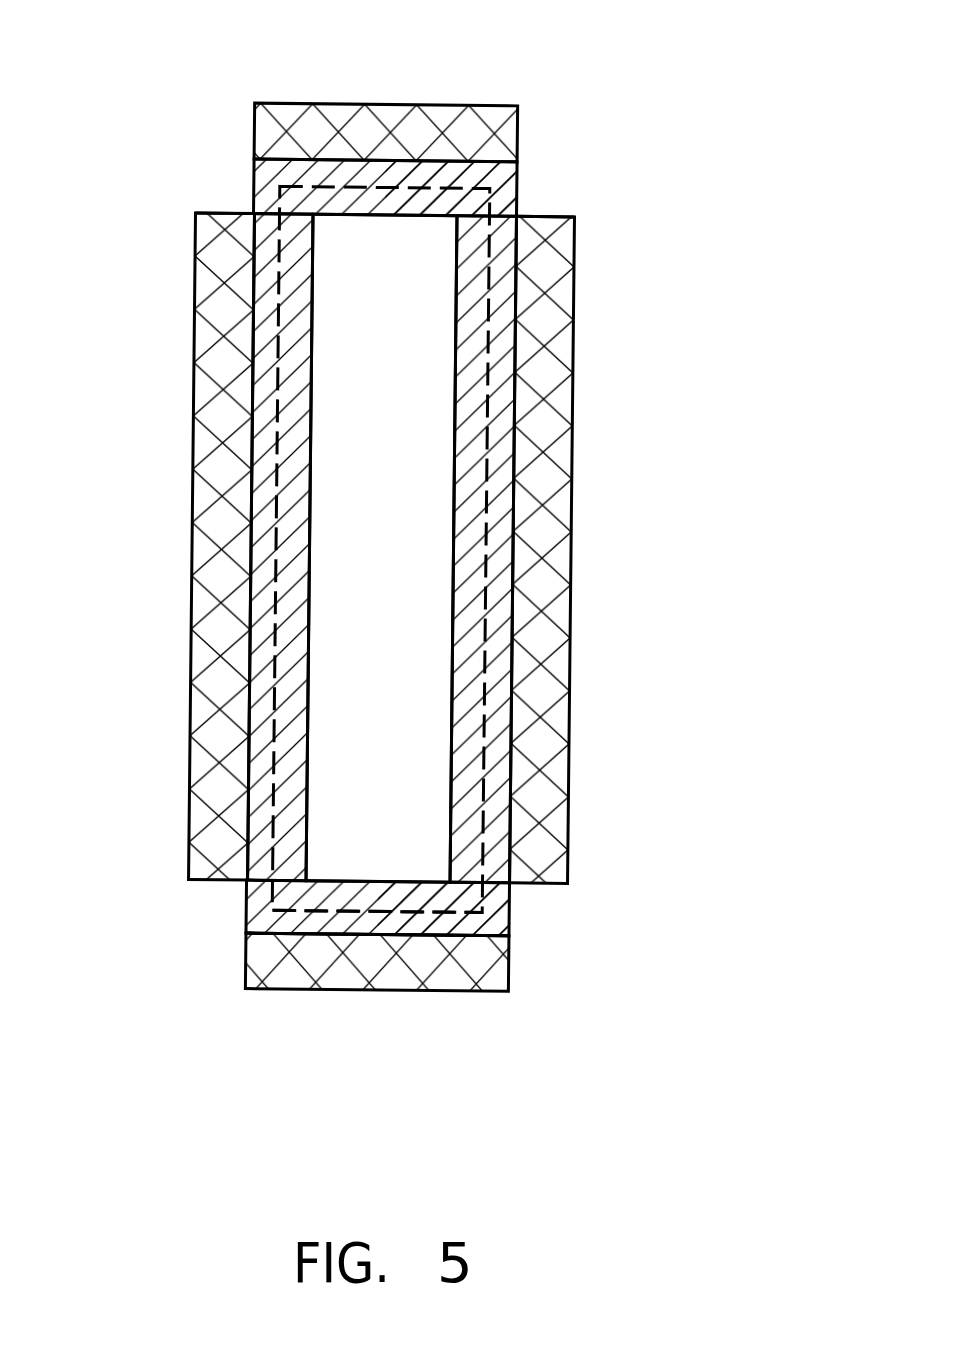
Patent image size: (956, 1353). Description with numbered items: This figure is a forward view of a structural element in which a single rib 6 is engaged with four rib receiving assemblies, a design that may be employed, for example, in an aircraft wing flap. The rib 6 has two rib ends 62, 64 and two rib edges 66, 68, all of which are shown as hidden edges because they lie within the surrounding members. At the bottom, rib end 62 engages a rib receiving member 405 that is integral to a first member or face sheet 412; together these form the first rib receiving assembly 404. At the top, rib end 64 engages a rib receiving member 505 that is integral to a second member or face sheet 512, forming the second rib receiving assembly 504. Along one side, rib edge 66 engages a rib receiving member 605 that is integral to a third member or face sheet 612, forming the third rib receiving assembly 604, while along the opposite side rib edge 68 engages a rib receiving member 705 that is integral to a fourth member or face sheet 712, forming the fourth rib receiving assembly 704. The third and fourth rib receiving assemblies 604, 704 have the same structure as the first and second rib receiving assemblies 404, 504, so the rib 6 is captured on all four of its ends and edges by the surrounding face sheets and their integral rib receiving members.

The second member or face sheet 512 is at (395, 125).
The rib receiving member 505 is at (270, 178).
The second rib receiving assembly 504 is at (520, 162).
The third rib receiving assembly 604 is at (253, 213).
The fourth rib receiving assembly 704 is at (523, 215).
The rib end 64 is at (383, 187).
The rib edge 66 is at (280, 403).
The rib edge 68 is at (477, 730).
The rib 6 is at (393, 540).
The rib end 62 is at (381, 911).
The third member or face sheet 612 is at (220, 652).
The fourth member or face sheet 712 is at (555, 637).
The rib receiving member 605 is at (262, 863).
The rib receiving member 705 is at (493, 848).
The rib receiving member 405 is at (282, 922).
The first rib receiving assembly 404 is at (510, 936).
The first member or face sheet 412 is at (350, 970).